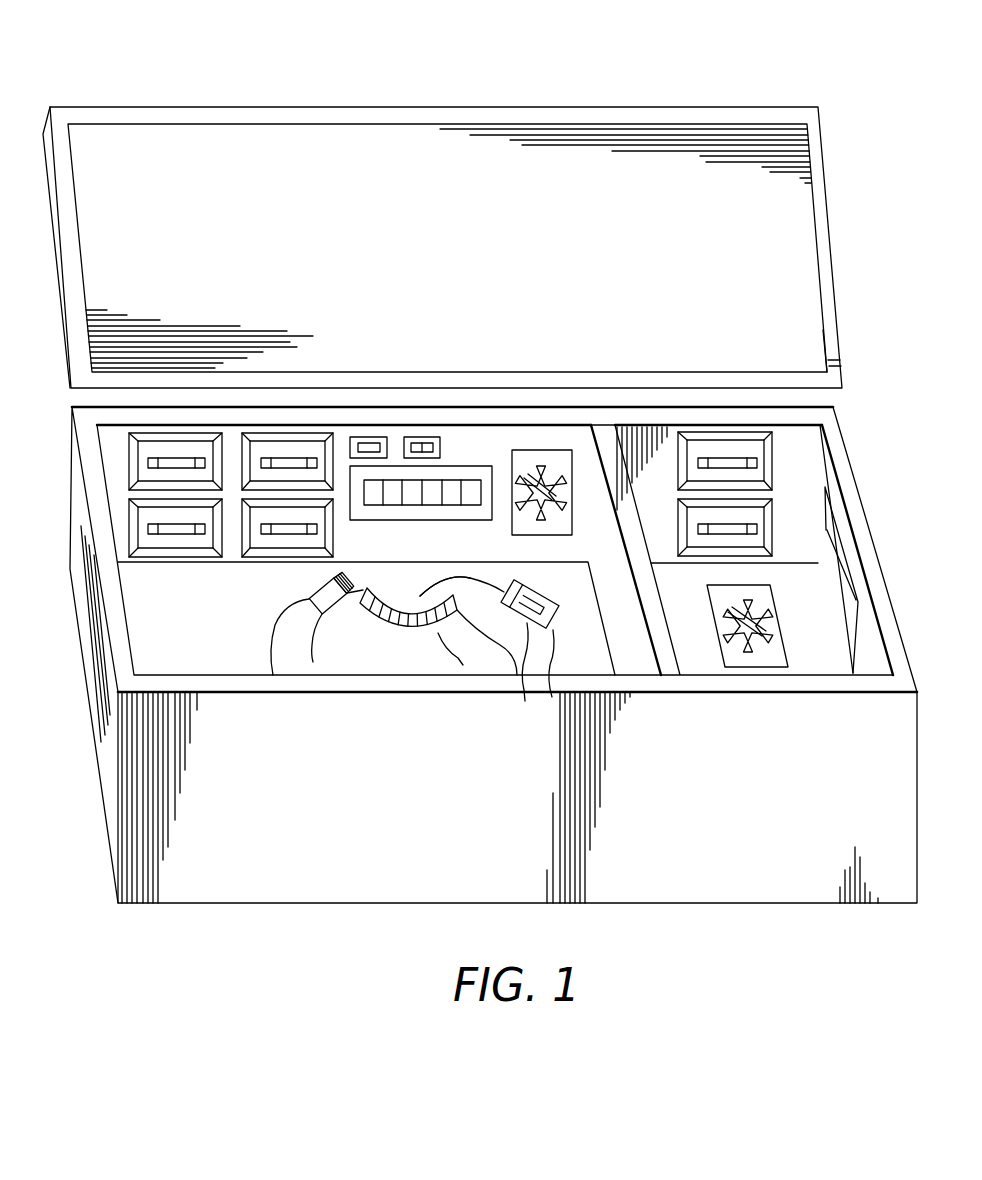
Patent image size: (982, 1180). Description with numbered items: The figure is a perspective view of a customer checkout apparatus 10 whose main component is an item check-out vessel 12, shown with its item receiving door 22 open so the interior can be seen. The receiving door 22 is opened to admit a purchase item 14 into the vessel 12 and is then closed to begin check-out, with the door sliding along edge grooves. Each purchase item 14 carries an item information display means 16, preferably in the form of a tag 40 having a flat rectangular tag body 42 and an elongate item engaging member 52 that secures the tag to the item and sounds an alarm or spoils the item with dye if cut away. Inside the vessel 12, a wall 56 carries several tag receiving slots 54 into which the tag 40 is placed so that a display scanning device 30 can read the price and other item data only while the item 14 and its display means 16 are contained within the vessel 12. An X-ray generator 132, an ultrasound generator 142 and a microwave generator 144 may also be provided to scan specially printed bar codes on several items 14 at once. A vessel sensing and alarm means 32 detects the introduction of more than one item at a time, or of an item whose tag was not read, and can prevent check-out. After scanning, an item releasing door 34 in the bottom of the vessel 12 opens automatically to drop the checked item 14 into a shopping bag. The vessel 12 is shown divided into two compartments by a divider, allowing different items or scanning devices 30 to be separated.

The customer checkout apparatus 10 is at (832, 40).
The item check-out vessel 12 is at (874, 553).
The purchase item 14 is at (382, 655).
The item information display means 16 is at (541, 681).
The item receiving door 22 is at (833, 270).
The display scanning device 30 is at (547, 503).
The vessel sensing and alarm means 32 is at (858, 618).
The item releasing door 34 is at (203, 638).
The tag 40 is at (521, 703).
The tag body 42 is at (520, 579).
The elongate item engaging member 52 is at (440, 578).
The tag receiving slot 54 is at (193, 458).
The wall 56 is at (803, 454).
The X-ray generator 132 is at (467, 463).
The ultrasound generator 142 is at (378, 437).
The microwave generator 144 is at (422, 437).